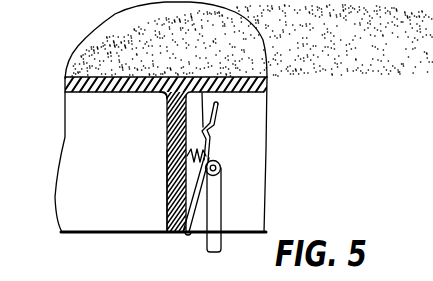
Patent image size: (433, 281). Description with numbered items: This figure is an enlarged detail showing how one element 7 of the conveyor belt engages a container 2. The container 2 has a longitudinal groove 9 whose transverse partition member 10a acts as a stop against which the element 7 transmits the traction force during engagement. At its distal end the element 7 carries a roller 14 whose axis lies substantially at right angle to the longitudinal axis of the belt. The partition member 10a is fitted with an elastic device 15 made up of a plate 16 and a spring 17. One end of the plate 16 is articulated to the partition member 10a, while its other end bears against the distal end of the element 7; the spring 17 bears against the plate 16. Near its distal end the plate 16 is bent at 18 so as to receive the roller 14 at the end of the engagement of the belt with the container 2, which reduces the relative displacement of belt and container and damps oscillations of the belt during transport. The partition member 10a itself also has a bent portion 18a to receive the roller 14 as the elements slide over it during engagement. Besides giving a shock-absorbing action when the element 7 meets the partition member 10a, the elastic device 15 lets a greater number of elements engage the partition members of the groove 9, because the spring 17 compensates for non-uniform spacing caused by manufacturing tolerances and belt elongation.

The container 2 is at (228, 31).
The longitudinal groove 9 is at (82, 145).
The spring 17 is at (166, 132).
The plate 16 is at (197, 180).
The transverse partition member 10a is at (166, 206).
The bent portion 18a is at (165, 77).
The bent portion 18 is at (202, 78).
The roller 14 is at (221, 162).
The elastic device 15 is at (205, 209).
The element 7 is at (215, 244).